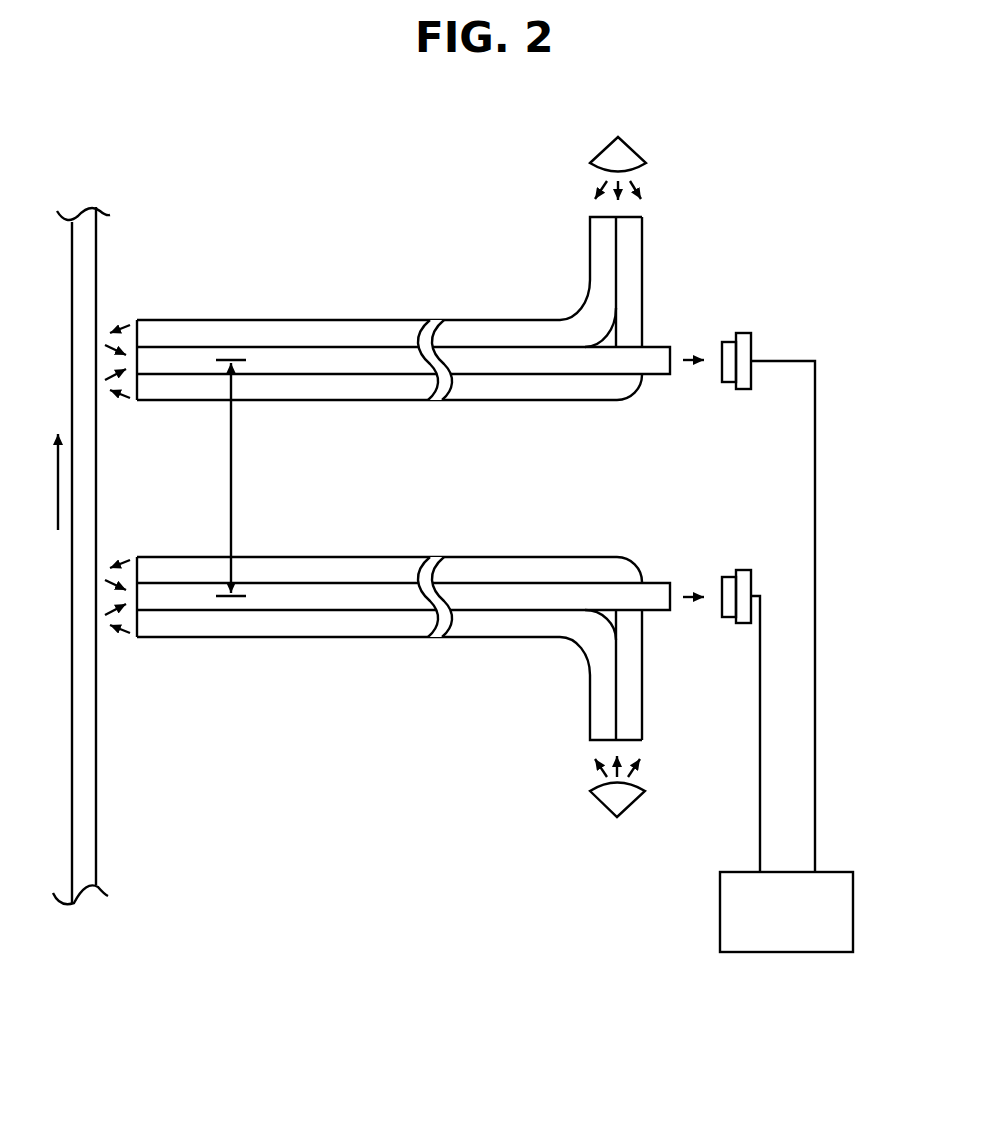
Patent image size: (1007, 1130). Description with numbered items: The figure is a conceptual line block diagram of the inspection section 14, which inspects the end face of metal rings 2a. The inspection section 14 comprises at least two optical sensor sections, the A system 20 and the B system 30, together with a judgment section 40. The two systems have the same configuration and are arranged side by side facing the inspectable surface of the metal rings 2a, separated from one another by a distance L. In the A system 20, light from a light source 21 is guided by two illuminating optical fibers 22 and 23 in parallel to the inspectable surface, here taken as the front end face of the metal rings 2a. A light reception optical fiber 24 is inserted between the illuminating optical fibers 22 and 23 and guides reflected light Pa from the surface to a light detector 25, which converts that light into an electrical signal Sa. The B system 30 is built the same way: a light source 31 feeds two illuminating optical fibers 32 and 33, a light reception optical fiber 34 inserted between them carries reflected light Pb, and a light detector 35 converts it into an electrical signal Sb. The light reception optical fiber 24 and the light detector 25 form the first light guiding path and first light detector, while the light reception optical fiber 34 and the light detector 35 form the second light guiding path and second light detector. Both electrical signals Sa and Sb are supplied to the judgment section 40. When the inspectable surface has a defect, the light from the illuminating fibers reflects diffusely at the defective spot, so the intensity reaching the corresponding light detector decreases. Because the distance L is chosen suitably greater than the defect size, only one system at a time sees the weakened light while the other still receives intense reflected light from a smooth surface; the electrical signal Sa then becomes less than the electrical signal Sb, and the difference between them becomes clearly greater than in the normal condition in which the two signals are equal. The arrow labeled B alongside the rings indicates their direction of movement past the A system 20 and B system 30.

The inspection section 14 is at (756, 186).
The metal rings 2a is at (97, 704).
The A system optical inspection section 20 is at (272, 278).
The light source 21 is at (598, 150).
The illuminating optical fiber 22 is at (588, 282).
The illuminating optical fiber 23 is at (643, 282).
The light reception optical fiber 24 is at (540, 376).
The light detector 25 is at (740, 390).
The B system optical inspection section 30 is at (272, 678).
The light source 31 is at (601, 820).
The illuminating optical fiber 32 is at (589, 698).
The illuminating optical fiber 33 is at (643, 697).
The light reception optical fiber 34 is at (528, 582).
The light detector 35 is at (738, 568).
The judgment section 40 is at (776, 953).
The B system B is at (58, 470).
The distance L is at (231, 473).
The reflected light Pa is at (684, 358).
The reflected light Pb is at (684, 595).
The electrical signal Sa is at (817, 520).
The electrical signal Sb is at (759, 810).